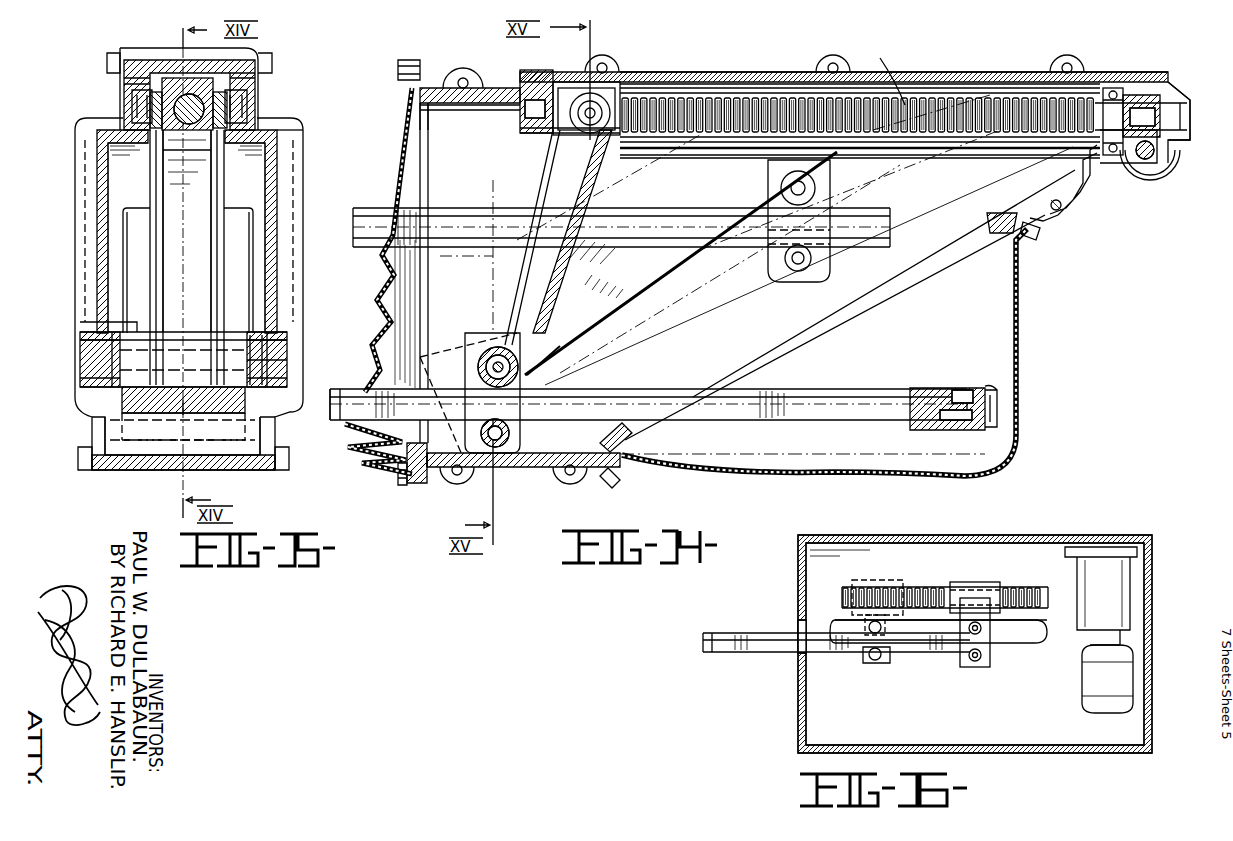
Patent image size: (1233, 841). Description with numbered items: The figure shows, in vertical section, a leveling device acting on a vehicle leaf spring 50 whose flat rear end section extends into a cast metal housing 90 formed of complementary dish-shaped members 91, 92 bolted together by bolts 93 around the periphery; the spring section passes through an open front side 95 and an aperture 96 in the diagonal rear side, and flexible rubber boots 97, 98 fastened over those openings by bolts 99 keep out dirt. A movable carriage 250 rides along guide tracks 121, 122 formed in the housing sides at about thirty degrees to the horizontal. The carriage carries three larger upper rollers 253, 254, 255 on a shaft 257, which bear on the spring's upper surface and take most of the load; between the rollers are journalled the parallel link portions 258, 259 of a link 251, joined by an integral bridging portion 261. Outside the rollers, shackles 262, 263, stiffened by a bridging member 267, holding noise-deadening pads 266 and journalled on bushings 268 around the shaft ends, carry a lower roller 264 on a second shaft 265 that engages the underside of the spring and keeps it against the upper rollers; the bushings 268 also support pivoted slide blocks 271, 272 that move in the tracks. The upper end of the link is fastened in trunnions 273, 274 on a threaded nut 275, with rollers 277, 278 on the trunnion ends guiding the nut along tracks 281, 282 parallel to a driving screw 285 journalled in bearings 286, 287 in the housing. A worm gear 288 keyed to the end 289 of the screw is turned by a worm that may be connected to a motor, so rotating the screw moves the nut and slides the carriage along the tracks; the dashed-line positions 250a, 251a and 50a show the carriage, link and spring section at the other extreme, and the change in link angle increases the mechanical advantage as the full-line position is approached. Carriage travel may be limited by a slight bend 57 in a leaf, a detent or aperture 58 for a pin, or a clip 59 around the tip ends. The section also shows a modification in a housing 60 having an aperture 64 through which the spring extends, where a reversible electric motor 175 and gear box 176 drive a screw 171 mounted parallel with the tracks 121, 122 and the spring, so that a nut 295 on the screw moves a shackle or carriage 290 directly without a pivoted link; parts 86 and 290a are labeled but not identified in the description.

In FIG. 14, the leaf spring assembly 50 is at (410, 393).
In FIG. 16, the leaf spring assembly 50 is at (744, 665).
In FIG. 14, the dashed-line position of spring section 50a is at (390, 212).
In FIG. 16, the slight bend 57 is at (1040, 643).
In FIG. 14, the detent or aperture 58 is at (950, 398).
In FIG. 14, the clip 59 is at (1000, 384).
In FIG. 16, the housing 60 is at (1052, 535).
In FIG. 16, the aperture 64 is at (798, 623).
In FIG. 15, the tube 86 is at (229, 215).
In FIG. 15, the cast metal housing 90 is at (303, 122).
In FIG. 14, the cast metal housing 90 is at (731, 67).
In FIG. 15, the dish-shaped member 91 is at (295, 174).
In FIG. 15, the dish-shaped member 92 is at (85, 176).
In FIG. 14, the dish-shaped member 92 is at (982, 73).
In FIG. 15, the bolts 93 is at (272, 58).
In FIG. 14, the bolts 93 is at (470, 67).
In FIG. 14, the open front side 95 is at (420, 108).
In FIG. 14, the aperture 96 is at (996, 235).
In FIG. 14, the rubber boot 97 is at (398, 157).
In FIG. 14, the rubber boot 98 is at (1019, 305).
In FIG. 14, the bolts 99 is at (402, 60).
In FIG. 15, the guide track 121 is at (290, 325).
In FIG. 15, the guide track 122 is at (120, 352).
In FIG. 14, the guide track 122 is at (663, 317).
In FIG. 16, the guide track 122 is at (915, 640).
In FIG. 16, the screw 171 is at (918, 587).
In FIG. 16, the reversible electric motor 175 is at (1133, 676).
In FIG. 16, the gear box 176 is at (1130, 582).
In FIG. 15, the movable carriage 250 is at (265, 410).
In FIG. 14, the movable carriage 250 is at (480, 330).
In FIG. 14, the dashed-line position of carriage 250a is at (838, 275).
In FIG. 15, the link 251 is at (200, 200).
In FIG. 14, the link 251 is at (531, 203).
In FIG. 14, the dashed-line position of link 251a is at (925, 190).
In FIG. 15, the upper roller 253 is at (130, 335).
In FIG. 15, the upper roller 254 is at (170, 333).
In FIG. 14, the upper roller 254 is at (580, 374).
In FIG. 15, the upper roller 255 is at (238, 335).
In FIG. 15, the shaft 257 is at (287, 370).
In FIG. 14, the shaft 257 is at (548, 334).
In FIG. 15, the parallel link portion 258 is at (158, 264).
In FIG. 14, the parallel link portion 258 is at (496, 258).
In FIG. 15, the parallel link portion 259 is at (215, 243).
In FIG. 14, the integral bridging portion 261 is at (590, 178).
In FIG. 15, the shackle 262 is at (92, 410).
In FIG. 14, the shackle 262 is at (540, 386).
In FIG. 15, the shackle 263 is at (258, 437).
In FIG. 15, the lower roller 264 is at (206, 453).
In FIG. 14, the lower roller 264 is at (520, 455).
In FIG. 15, the second shaft 265 is at (277, 466).
In FIG. 14, the second shaft 265 is at (512, 432).
In FIG. 15, the noise deadening pads 266 is at (210, 413).
In FIG. 14, the bridging member 267 is at (465, 345).
In FIG. 15, the bushings 268 is at (82, 356).
In FIG. 15, the pivoted slide block 271 is at (275, 385).
In FIG. 15, the pivoted slide block 272 is at (82, 380).
In FIG. 14, the pivoted slide block 272 is at (538, 350).
In FIG. 15, the trunnion 273 is at (250, 103).
In FIG. 14, the trunnion 273 is at (600, 130).
In FIG. 15, the trunnion 274 is at (132, 103).
In FIG. 15, the threaded nut 275 is at (205, 70).
In FIG. 14, the threaded nut 275 is at (640, 73).
In FIG. 15, the roller 277 is at (248, 86).
In FIG. 14, the roller 277 is at (560, 135).
In FIG. 15, the roller 278 is at (126, 84).
In FIG. 15, the track 281 is at (297, 128).
In FIG. 15, the track 282 is at (150, 122).
In FIG. 14, the track 282 is at (883, 78).
In FIG. 15, the driving screw 285 is at (188, 93).
In FIG. 14, the driving screw 285 is at (762, 100).
In FIG. 14, the bearing 286 is at (535, 100).
In FIG. 14, the bearing 287 is at (1115, 88).
In FIG. 14, the worm gear 288 is at (1145, 95).
In FIG. 14, the end of screw 289 is at (1172, 92).
In FIG. 16, the movable shackle or carriage 290 is at (989, 576).
In FIG. 16, the roller 290a is at (878, 675).
In FIG. 16, the nut 295 is at (968, 582).